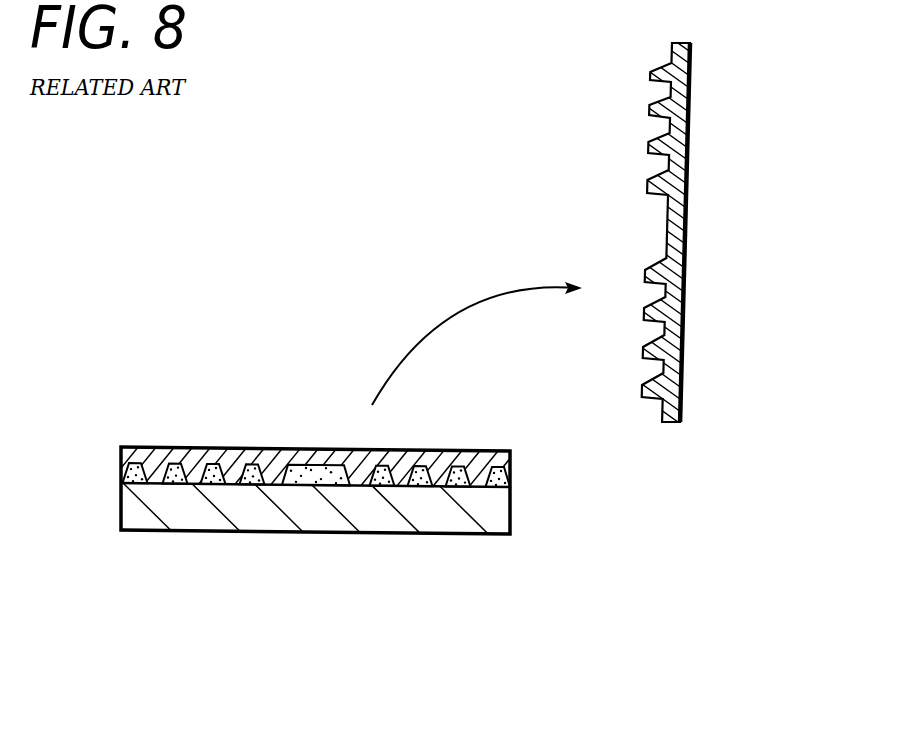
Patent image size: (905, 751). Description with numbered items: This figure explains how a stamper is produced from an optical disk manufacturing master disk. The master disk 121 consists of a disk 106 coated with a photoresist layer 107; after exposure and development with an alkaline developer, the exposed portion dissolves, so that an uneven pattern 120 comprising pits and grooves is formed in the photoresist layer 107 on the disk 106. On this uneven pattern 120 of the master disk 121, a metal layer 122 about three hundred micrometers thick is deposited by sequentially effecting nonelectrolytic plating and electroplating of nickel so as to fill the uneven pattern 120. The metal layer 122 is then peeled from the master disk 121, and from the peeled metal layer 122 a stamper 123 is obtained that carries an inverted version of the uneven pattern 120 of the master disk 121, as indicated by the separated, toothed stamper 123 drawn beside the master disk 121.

The disk 106 is at (262, 513).
The photoresist layer 107 is at (327, 487).
The uneven pattern 120 is at (273, 455).
The master disk 121 is at (490, 508).
The metal layer 122 is at (447, 464).
The stamper 123 is at (673, 195).